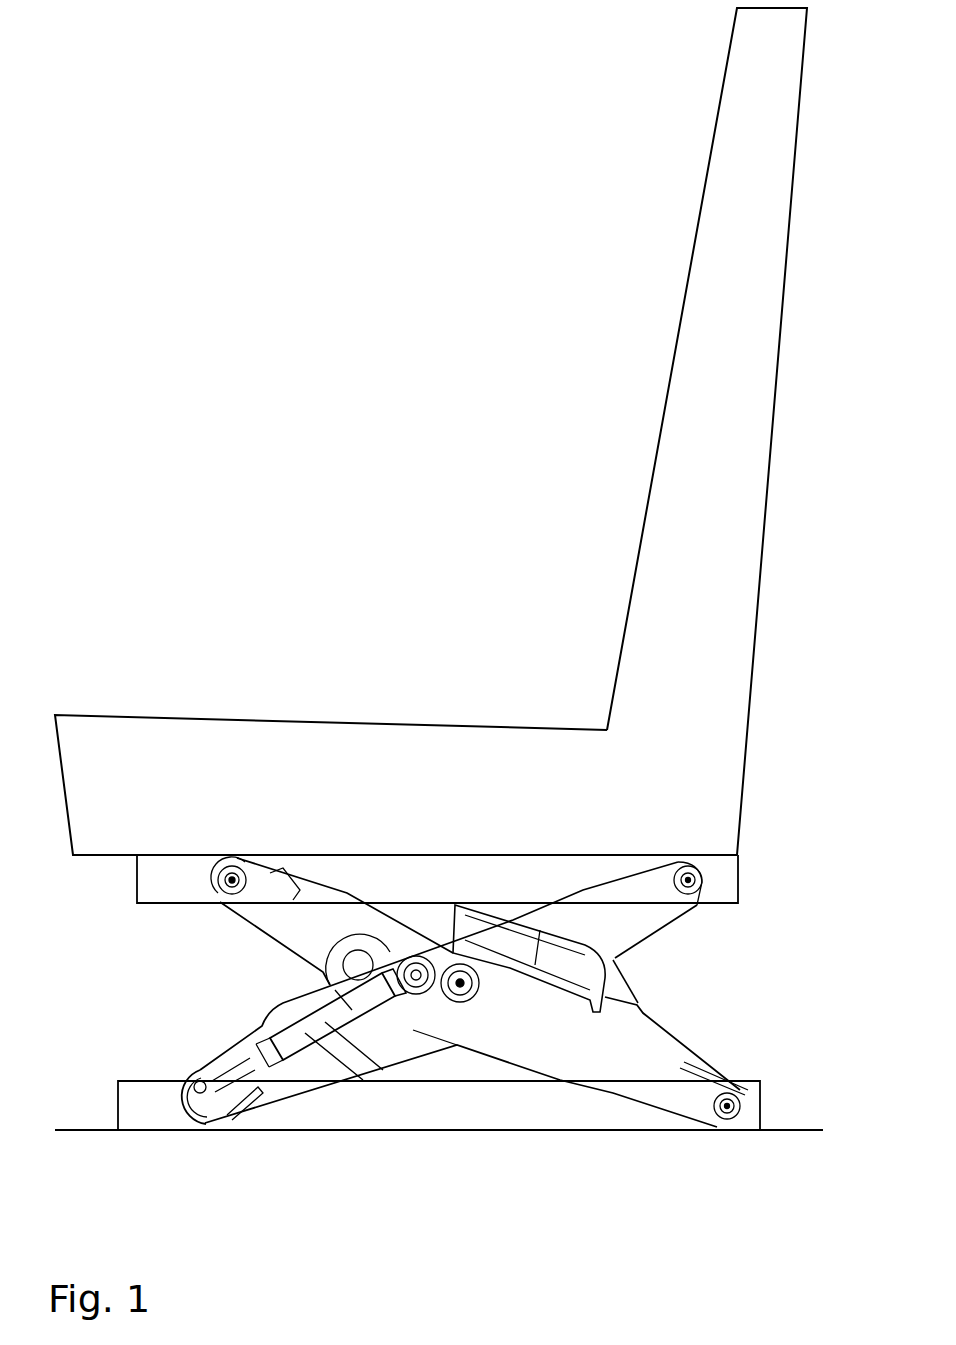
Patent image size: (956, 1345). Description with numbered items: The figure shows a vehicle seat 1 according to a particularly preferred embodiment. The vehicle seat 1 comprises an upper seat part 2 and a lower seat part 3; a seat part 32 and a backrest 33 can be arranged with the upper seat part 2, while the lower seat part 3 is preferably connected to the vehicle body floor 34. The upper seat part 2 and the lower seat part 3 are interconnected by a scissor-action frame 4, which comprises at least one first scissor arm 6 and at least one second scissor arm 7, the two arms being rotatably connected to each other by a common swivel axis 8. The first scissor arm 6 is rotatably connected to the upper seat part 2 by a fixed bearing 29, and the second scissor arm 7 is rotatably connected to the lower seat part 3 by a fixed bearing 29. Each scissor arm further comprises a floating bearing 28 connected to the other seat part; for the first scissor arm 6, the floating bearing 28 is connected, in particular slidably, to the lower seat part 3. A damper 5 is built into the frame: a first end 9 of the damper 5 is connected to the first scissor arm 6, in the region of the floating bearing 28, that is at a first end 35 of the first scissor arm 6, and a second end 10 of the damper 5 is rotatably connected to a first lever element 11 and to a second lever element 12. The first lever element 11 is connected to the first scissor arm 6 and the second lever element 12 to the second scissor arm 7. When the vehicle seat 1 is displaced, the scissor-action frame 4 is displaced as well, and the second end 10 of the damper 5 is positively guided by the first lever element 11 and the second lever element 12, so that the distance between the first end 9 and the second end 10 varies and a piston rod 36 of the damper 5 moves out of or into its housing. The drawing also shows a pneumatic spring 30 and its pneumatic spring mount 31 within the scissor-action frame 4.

The vehicle seat 1 is at (431, 431).
The upper seat part 2 is at (137, 888).
The lower seat part 3 is at (125, 1110).
The scissor-action frame 4 is at (442, 996).
The damper 5 is at (285, 1037).
The first scissor arm 6 is at (283, 940).
The second scissor arm 7 is at (270, 1100).
The common swivel axis 8 is at (482, 1005).
The first end of damper 9 is at (186, 1060).
The second end of damper 10 is at (418, 950).
The first lever element 11 is at (368, 930).
The second lever element 12 is at (367, 1043).
The floating bearing 28 is at (228, 898).
The fixed bearing 29 is at (703, 877).
The pneumatic spring 30 is at (416, 1000).
The pneumatic spring mount 31 is at (445, 930).
The seat part 32 is at (404, 718).
The backrest 33 is at (632, 548).
The vehicle body floor 34 is at (806, 1150).
The first end of first scissor arm 35 is at (180, 1088).
The piston rod 36 is at (218, 1058).